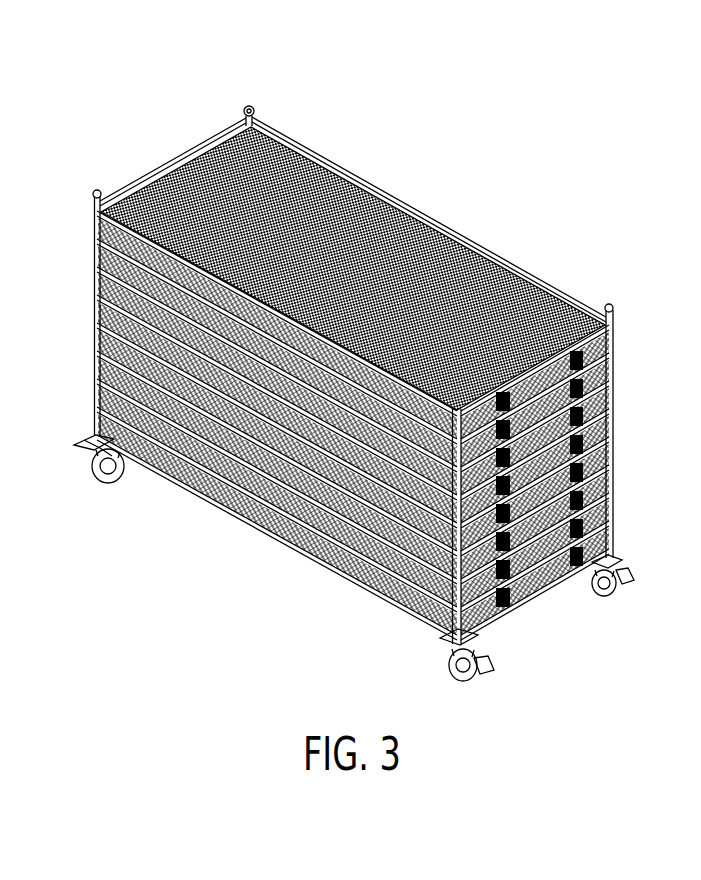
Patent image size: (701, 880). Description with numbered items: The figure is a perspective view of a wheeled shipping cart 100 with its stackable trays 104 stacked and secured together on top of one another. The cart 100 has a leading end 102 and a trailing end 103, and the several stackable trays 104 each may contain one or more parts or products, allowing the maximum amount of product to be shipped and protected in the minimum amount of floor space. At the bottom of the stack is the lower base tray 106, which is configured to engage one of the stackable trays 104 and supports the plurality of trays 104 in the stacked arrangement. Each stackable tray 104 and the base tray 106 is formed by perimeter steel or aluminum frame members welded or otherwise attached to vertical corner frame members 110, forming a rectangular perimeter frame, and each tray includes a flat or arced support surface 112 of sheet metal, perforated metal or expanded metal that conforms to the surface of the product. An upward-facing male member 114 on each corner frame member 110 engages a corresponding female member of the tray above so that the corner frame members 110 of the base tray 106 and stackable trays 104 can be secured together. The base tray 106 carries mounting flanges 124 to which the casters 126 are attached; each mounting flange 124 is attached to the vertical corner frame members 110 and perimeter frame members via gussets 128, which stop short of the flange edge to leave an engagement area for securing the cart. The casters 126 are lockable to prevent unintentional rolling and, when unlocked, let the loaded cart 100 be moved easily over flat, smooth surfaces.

The wheeled shipping cart 100 is at (468, 196).
The leading end 102 is at (128, 134).
The trailing end 103 is at (630, 423).
The stackable tray 104 is at (518, 262).
The lower base tray 106 is at (245, 502).
The vertical corner frame member 110 is at (604, 316).
The support surface 112 is at (368, 215).
The male member 114 is at (240, 97).
The mounting flange 124 is at (432, 622).
The caster 126 is at (463, 653).
The gusset 128 is at (466, 620).